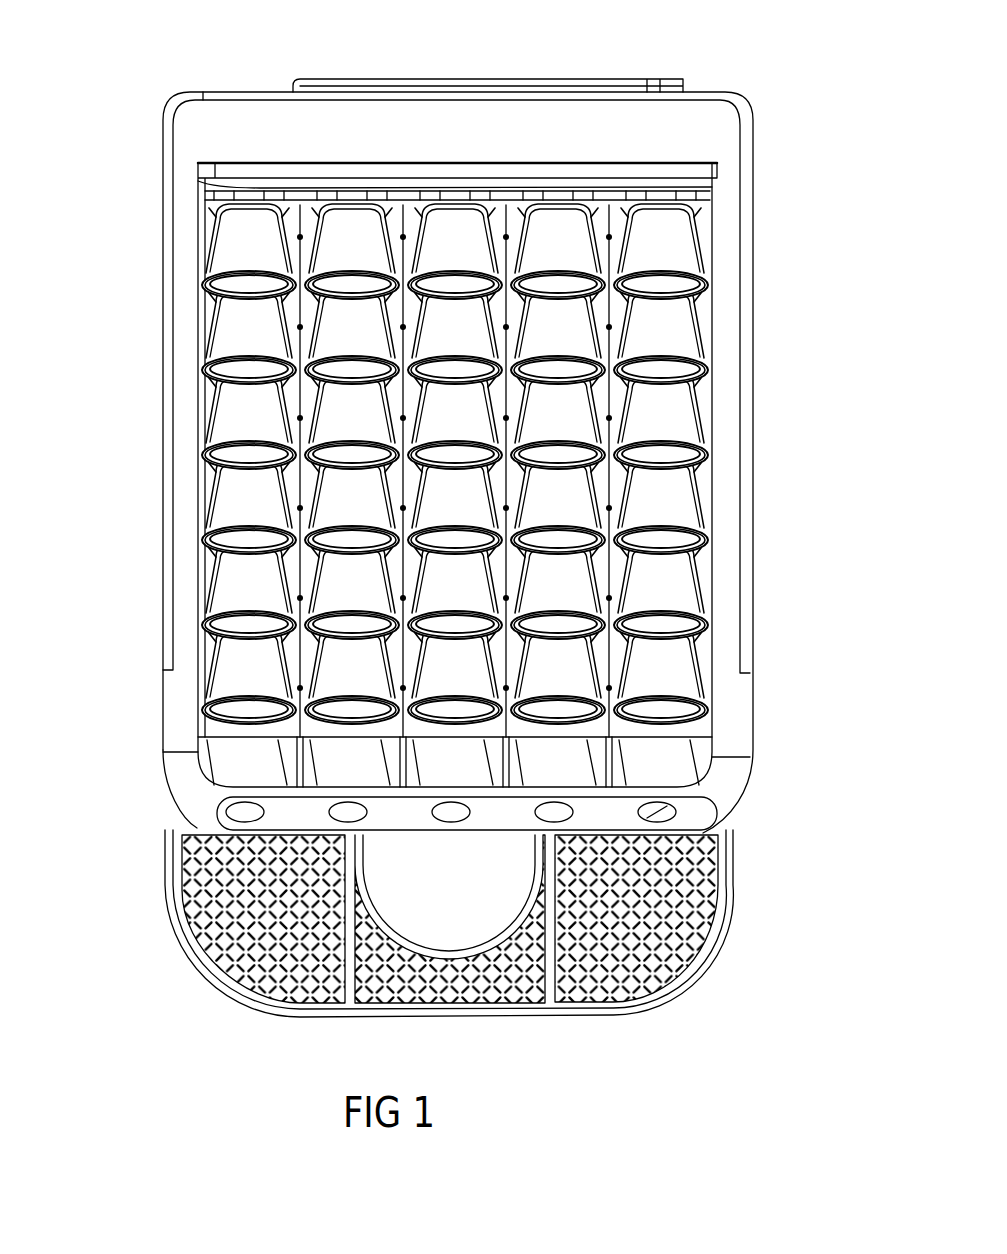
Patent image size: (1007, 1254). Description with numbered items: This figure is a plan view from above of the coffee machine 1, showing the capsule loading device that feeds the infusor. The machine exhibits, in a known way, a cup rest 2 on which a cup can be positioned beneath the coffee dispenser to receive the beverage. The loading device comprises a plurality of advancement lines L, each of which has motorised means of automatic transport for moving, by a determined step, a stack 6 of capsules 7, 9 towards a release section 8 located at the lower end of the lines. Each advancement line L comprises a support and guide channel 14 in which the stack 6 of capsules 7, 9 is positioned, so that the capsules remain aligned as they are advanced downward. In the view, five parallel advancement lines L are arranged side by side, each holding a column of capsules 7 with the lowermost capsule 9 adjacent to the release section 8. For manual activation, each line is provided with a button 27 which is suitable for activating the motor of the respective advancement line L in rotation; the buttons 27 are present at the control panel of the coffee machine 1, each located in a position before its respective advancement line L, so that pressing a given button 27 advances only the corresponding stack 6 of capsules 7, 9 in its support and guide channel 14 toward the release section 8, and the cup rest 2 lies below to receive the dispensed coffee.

The coffee machine 1 is at (775, 67).
The cup rest 2 is at (222, 945).
The stack of capsules 6 is at (467, 395).
The capsules 7 is at (333, 508).
The release section 8 is at (640, 772).
The capsules 9 is at (265, 676).
The support and guide channel 14 is at (405, 593).
The button 27 is at (657, 812).
The advancement line L is at (668, 222).